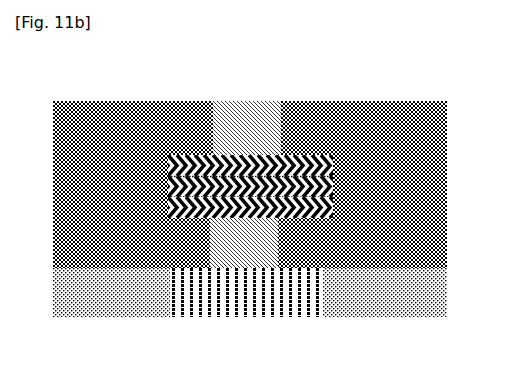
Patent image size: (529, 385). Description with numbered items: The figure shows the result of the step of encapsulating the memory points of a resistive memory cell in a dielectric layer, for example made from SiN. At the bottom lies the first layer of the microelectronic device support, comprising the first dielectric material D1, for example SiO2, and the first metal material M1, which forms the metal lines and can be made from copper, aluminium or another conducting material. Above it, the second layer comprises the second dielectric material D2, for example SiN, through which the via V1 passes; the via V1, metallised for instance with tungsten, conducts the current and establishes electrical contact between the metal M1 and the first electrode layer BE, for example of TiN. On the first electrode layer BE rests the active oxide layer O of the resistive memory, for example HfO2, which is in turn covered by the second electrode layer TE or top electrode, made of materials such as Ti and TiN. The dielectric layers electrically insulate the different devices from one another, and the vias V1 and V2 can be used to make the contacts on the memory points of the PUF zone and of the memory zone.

The via V2 is at (264, 118).
The second electrode layer TE is at (156, 165).
The active oxide layer O is at (323, 182).
The first electrode layer BE is at (325, 207).
The via V1 is at (233, 246).
The second dielectric material D2 is at (412, 232).
The first dielectric material D1 is at (408, 293).
The first metal material M1 is at (247, 300).